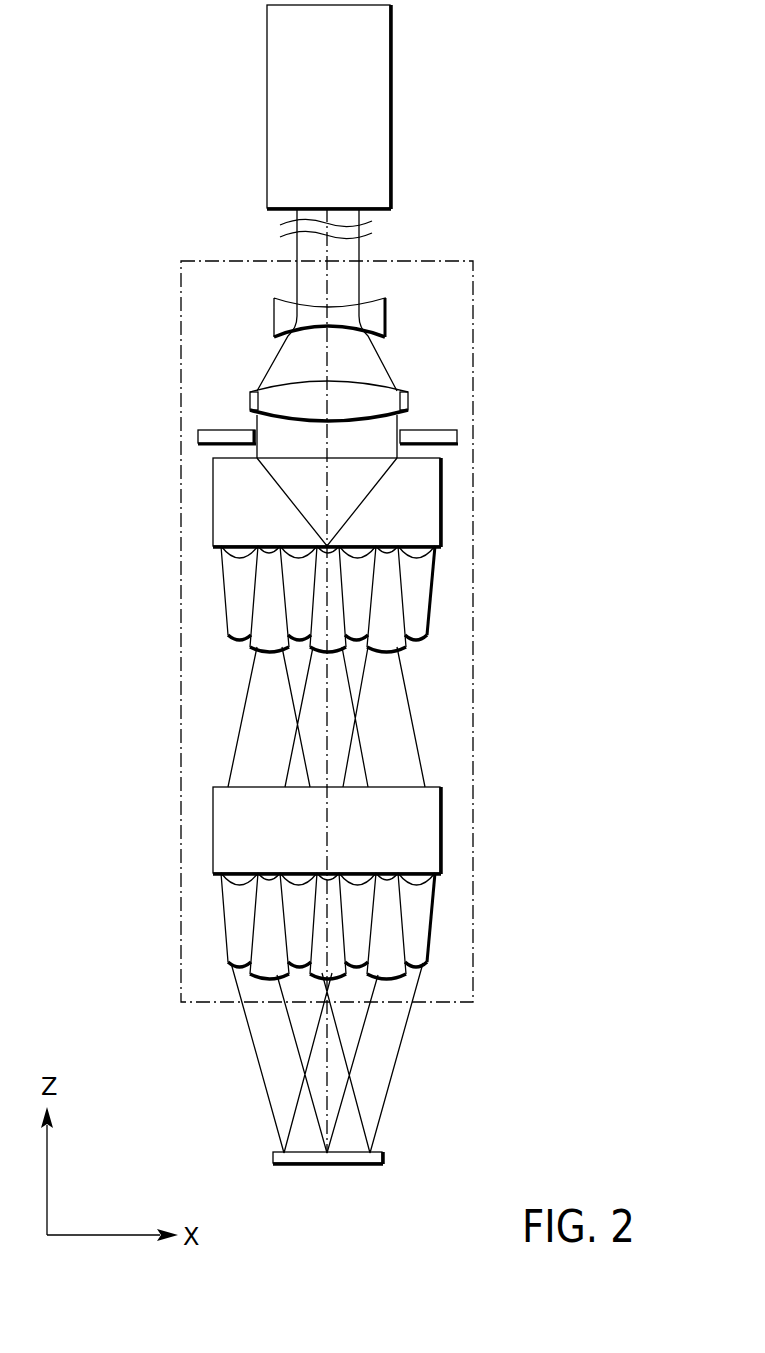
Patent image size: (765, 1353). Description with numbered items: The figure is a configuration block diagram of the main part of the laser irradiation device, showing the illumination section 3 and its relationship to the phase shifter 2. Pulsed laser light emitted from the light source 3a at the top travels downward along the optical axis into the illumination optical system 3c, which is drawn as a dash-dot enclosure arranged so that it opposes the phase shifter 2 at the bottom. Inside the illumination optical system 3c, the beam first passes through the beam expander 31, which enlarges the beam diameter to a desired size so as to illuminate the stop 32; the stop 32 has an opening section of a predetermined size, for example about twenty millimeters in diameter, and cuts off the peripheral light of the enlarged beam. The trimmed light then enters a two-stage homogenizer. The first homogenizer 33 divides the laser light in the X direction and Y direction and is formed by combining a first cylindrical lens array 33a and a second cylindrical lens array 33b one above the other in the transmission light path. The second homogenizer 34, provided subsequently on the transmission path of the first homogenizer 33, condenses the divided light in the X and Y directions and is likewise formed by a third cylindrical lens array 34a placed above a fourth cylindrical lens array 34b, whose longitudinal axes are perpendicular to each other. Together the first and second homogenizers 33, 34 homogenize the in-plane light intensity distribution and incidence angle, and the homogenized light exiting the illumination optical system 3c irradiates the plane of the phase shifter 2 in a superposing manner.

The phase shifter 2 is at (272, 1157).
The illumination section 3 is at (376, 579).
The light source 3a is at (391, 118).
The illumination optical system 3c is at (172, 490).
The beam expander 31 is at (245, 295).
The stop 32 is at (458, 436).
The first homogenizer 33 is at (405, 555).
The first cylindrical lens array 33a is at (441, 507).
The second cylindrical lens array 33b is at (381, 599).
The second homogenizer 34 is at (405, 882).
The third cylindrical lens array 34a is at (441, 832).
The fourth cylindrical lens array 34b is at (381, 926).